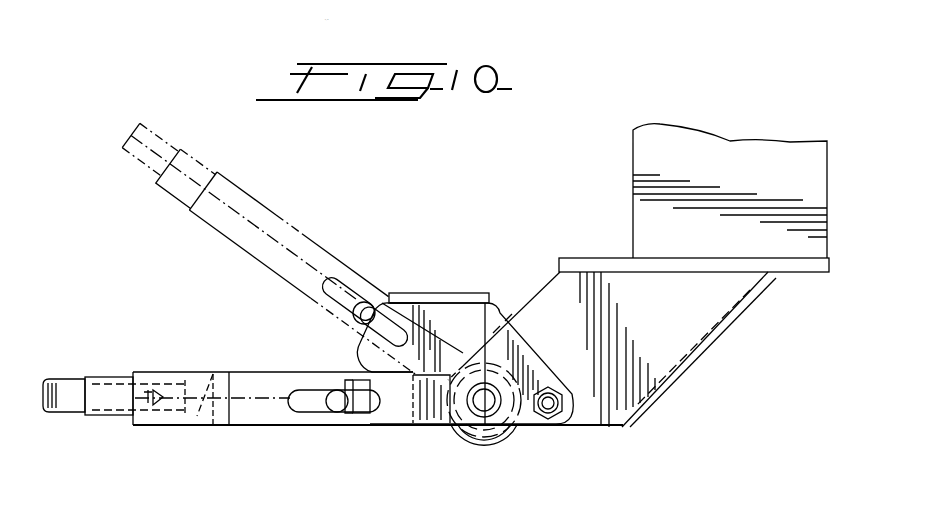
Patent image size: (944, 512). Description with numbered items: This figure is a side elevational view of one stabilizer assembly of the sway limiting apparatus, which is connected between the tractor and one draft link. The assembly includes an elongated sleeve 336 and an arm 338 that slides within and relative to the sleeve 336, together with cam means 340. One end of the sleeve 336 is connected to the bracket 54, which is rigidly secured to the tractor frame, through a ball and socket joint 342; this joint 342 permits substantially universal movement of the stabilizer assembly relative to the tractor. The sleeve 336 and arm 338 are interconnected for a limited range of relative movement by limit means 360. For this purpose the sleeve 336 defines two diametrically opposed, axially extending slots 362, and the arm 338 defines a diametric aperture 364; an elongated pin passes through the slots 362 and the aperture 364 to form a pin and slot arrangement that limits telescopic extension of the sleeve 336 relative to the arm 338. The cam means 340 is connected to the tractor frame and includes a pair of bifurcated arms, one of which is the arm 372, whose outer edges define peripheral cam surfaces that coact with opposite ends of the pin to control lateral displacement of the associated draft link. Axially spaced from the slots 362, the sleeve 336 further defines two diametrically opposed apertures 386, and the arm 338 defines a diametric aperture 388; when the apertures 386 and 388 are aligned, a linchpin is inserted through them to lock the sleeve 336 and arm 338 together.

The bracket 54 is at (682, 320).
The elongated sleeve 336 is at (180, 372).
The arm 338 is at (113, 412).
The cam means 340 is at (413, 294).
The ball and socket joint 342 is at (492, 432).
The limit means 360 is at (337, 413).
The slots 362 is at (301, 408).
The aperture 364 is at (336, 392).
The bifurcated arm 372 is at (452, 307).
The apertures 386 is at (229, 430).
The aperture 388 is at (205, 422).